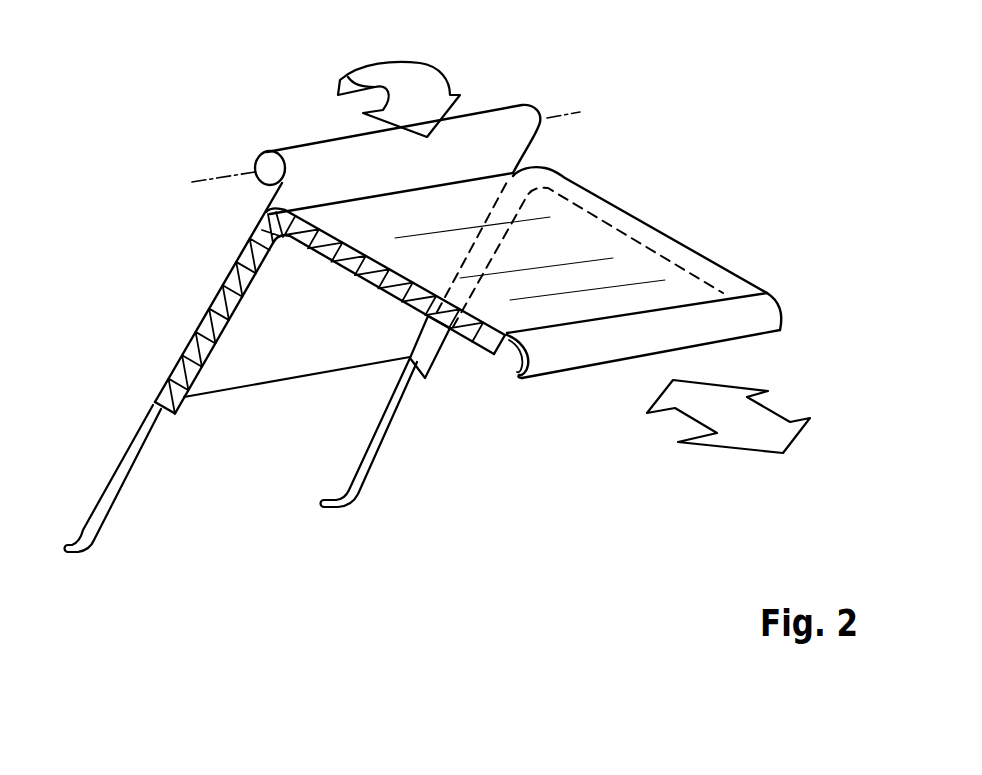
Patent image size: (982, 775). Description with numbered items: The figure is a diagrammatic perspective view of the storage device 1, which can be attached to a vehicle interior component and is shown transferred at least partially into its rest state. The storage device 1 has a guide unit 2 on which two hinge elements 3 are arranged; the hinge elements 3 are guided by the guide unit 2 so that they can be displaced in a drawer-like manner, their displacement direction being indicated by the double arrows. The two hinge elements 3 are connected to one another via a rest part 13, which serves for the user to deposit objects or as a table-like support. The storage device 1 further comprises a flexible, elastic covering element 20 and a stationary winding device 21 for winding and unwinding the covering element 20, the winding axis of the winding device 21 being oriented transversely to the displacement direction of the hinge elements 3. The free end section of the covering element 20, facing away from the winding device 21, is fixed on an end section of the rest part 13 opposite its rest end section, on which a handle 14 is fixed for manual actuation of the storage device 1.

The storage device 1 is at (190, 116).
The guide unit 2 is at (132, 478).
The hinge element 3 is at (151, 410).
The rest part 13 is at (583, 243).
The handle 14 is at (762, 306).
The covering element 20 is at (530, 153).
The winding device 21 is at (266, 160).